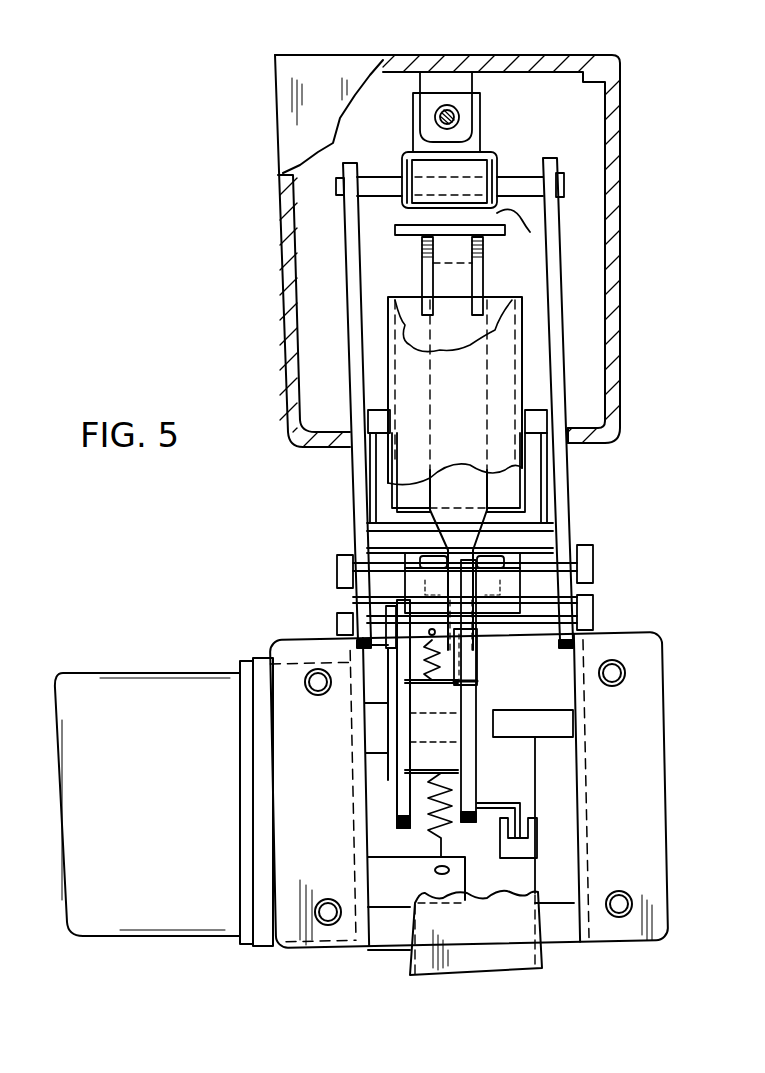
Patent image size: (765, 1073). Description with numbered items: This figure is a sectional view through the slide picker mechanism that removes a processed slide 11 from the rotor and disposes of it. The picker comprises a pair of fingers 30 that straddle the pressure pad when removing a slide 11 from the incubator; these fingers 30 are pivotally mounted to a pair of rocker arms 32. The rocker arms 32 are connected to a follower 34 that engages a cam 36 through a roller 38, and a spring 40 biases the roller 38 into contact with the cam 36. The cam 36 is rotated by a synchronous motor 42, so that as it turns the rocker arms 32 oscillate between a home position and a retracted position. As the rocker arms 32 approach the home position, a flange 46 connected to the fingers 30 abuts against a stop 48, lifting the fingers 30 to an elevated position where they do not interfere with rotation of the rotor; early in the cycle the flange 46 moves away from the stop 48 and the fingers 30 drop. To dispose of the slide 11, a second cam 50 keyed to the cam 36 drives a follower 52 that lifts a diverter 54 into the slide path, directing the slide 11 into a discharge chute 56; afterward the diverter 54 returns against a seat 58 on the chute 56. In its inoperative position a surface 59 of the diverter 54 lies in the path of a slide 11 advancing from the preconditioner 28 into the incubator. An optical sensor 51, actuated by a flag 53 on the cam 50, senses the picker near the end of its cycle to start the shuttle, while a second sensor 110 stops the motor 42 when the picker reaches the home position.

The preconditioner 28 is at (499, 54).
The fingers 30 is at (503, 152).
The rocker arms 32 is at (345, 350).
The follower 34 is at (380, 530).
The cam 36 is at (395, 780).
The roller 38 is at (380, 594).
The spring 40 is at (447, 828).
The synchronous motor 42 is at (160, 672).
The flange 46 is at (416, 128).
The stop 48 is at (470, 102).
The cam 50 is at (478, 762).
The optical sensor 51 is at (539, 836).
The follower 52 is at (480, 677).
The flag 53 is at (499, 802).
The diverter 54 is at (478, 494).
The discharge chute 56 is at (470, 410).
The seat 58 is at (478, 237).
The surface 59 is at (418, 240).
The second sensor 110 is at (524, 711).
The slide 11 is at (519, 232).